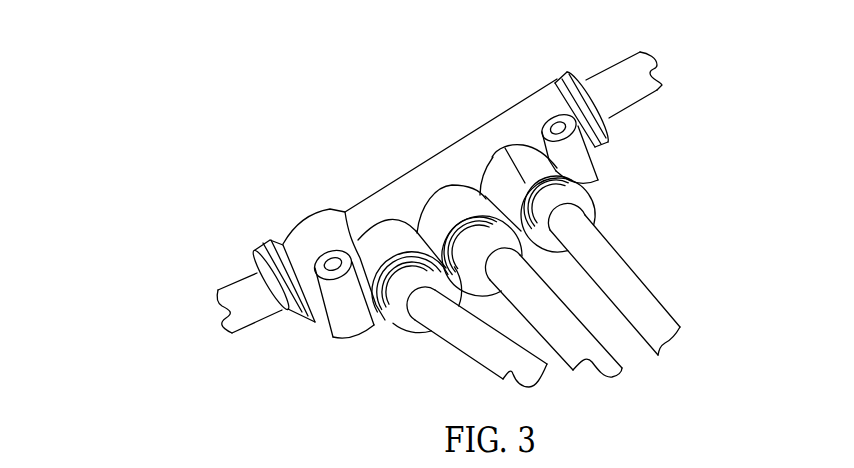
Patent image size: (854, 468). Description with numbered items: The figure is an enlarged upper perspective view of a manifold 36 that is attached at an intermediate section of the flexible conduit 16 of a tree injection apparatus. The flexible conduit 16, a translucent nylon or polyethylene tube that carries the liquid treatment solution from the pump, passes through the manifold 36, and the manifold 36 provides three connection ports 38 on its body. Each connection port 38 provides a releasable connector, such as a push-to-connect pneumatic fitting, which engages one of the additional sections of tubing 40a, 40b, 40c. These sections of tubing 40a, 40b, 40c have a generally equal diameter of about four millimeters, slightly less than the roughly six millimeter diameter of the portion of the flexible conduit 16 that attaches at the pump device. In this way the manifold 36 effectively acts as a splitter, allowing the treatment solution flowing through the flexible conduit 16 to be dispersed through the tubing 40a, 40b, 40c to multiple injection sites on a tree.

The flexible conduit 16 is at (618, 80).
The manifold 36 is at (395, 200).
The connection port 38 is at (480, 247).
The additional section of tubing 40a is at (467, 348).
The additional section of tubing 40b is at (543, 318).
The additional section of tubing 40c is at (633, 307).